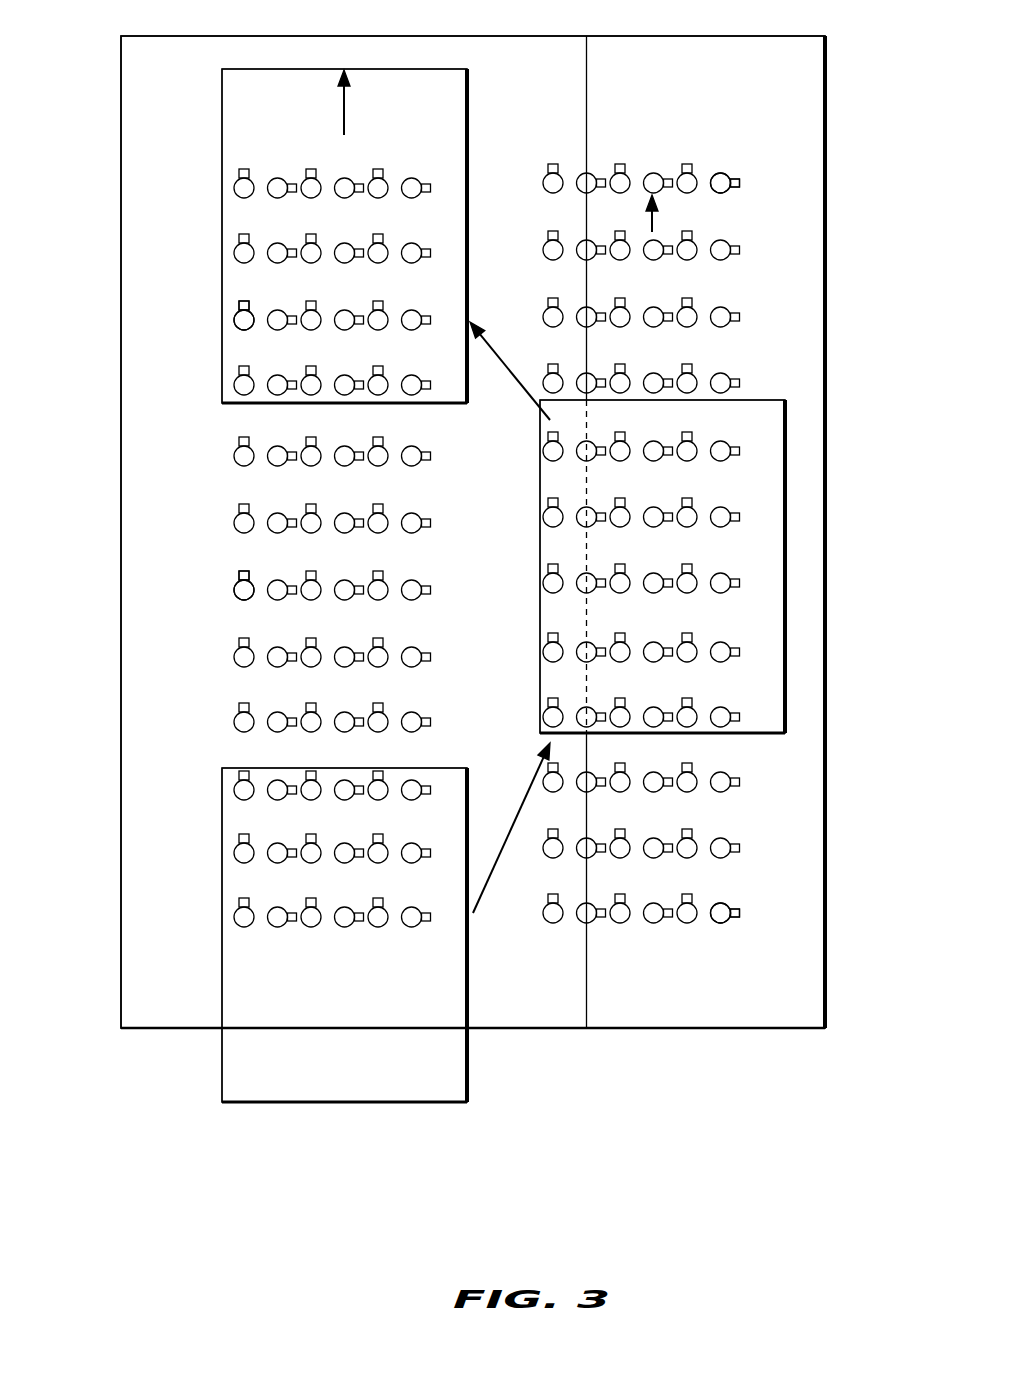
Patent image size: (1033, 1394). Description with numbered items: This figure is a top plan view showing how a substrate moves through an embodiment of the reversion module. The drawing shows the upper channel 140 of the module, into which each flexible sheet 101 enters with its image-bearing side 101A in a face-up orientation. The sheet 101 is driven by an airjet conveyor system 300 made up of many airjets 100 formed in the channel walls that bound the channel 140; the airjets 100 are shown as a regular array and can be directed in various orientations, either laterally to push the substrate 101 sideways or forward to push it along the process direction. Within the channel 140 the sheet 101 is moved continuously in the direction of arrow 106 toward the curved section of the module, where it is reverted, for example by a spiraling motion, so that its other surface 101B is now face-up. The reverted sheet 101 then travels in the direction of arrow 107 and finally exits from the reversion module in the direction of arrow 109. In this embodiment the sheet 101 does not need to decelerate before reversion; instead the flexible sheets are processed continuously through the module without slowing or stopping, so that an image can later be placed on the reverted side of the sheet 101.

The airjet conveyor system 300 is at (169, 521).
The airjets 100 is at (730, 175).
The flexible sheet 101 is at (222, 220).
The side of the sheet 101A is at (763, 527).
The surface of the sheet 101B is at (452, 122).
The arrow 106 is at (520, 800).
The arrow 107 is at (512, 375).
The arrow 109 is at (345, 102).
The upper channel 140 is at (169, 1064).